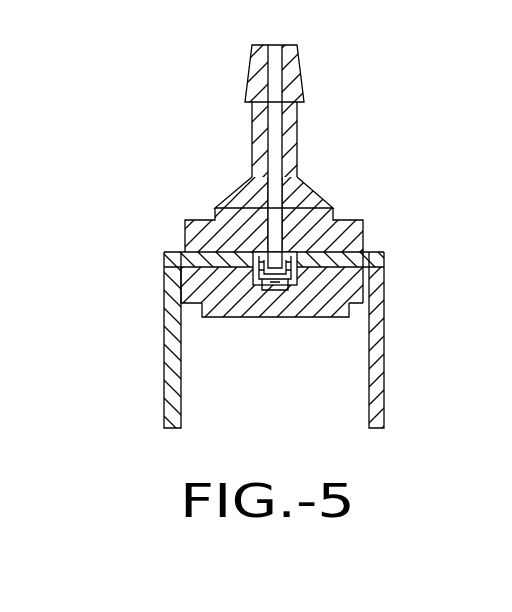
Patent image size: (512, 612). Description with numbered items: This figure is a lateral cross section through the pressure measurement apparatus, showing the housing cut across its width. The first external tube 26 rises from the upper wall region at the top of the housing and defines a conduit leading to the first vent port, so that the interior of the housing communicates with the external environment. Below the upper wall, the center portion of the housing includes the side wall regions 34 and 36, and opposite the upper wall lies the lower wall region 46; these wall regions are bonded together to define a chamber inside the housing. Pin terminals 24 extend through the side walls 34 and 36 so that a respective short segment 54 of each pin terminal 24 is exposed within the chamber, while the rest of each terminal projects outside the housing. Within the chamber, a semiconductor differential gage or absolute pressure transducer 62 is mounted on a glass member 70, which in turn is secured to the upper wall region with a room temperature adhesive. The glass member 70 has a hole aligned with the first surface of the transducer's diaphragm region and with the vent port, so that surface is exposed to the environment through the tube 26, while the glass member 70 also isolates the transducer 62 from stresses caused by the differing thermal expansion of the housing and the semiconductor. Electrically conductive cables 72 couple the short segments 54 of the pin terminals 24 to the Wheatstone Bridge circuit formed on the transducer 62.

The pin terminals 24 is at (164, 352).
The first external tube 26 is at (297, 137).
The side wall region 34 is at (167, 277).
The side wall region 36 is at (375, 283).
The lower wall region 46 is at (257, 300).
The short segment 54 is at (212, 218).
The semiconductor pressure transducer 62 is at (200, 288).
The glass member 70 is at (294, 262).
The electrically conductive cables 72 is at (292, 290).